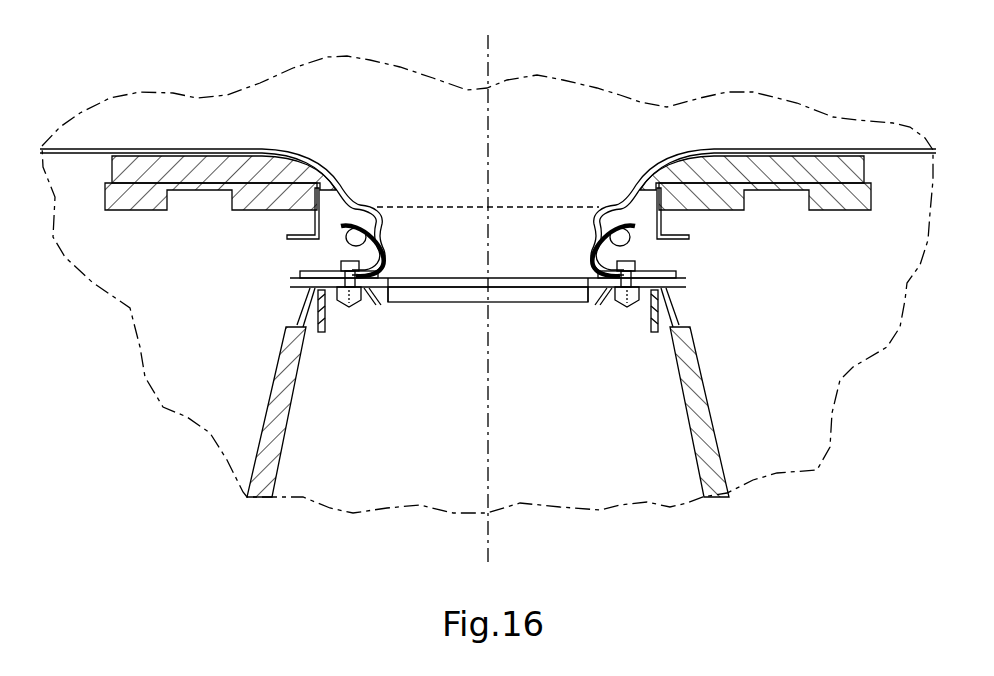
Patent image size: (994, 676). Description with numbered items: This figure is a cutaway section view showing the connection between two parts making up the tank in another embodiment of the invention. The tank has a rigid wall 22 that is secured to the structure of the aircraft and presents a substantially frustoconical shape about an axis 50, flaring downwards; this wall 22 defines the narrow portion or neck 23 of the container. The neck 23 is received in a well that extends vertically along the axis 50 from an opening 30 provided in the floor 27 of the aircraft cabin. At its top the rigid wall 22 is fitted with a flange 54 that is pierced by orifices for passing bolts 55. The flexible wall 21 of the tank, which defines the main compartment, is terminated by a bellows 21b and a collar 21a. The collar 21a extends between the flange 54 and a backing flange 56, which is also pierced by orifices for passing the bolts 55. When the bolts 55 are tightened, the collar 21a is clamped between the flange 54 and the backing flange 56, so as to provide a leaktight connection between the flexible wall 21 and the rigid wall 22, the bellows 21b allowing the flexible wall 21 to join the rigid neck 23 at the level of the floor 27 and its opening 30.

The flexible wall 21 is at (302, 151).
The collar 21a is at (377, 278).
The bellows 21b is at (385, 240).
The rigid wall 22 is at (287, 423).
The neck 23 is at (503, 424).
The floor 27 is at (254, 205).
The opening 30 is at (640, 246).
The axis 50 is at (488, 50).
The flange 54 is at (365, 290).
The bolts 55 is at (350, 308).
The backing flange 56 is at (345, 200).